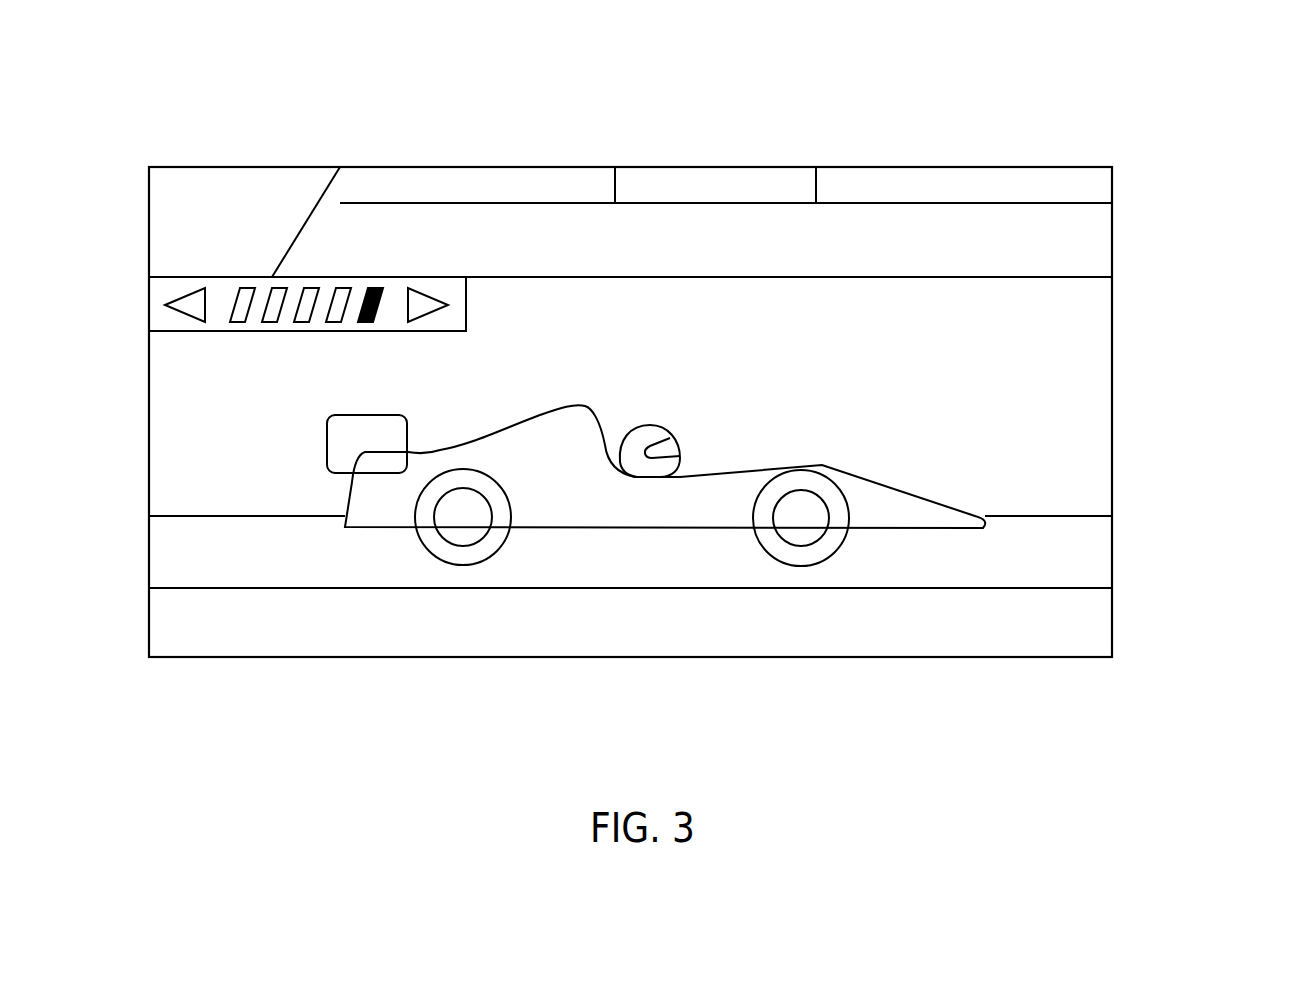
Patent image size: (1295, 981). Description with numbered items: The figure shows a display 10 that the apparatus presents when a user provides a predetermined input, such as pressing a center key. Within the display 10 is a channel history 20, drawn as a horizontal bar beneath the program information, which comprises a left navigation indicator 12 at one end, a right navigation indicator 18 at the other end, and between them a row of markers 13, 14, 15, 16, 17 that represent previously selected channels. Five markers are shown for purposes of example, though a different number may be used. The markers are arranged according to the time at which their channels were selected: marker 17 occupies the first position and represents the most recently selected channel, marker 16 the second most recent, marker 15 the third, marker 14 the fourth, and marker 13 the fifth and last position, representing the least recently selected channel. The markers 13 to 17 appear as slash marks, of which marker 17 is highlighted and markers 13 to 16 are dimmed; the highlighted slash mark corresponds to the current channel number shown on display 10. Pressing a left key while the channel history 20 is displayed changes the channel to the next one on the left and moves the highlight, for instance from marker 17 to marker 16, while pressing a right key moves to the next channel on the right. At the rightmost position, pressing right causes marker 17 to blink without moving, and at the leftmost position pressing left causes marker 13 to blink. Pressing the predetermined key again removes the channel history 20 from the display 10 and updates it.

The display 10 is at (1175, 72).
The left navigation indicator 12 is at (165, 318).
The marker 13 is at (230, 322).
The marker 14 is at (262, 322).
The marker 15 is at (294, 322).
The marker 16 is at (326, 322).
The marker 17 is at (377, 318).
The right navigation indicator 18 is at (427, 311).
The channel history 20 is at (466, 304).